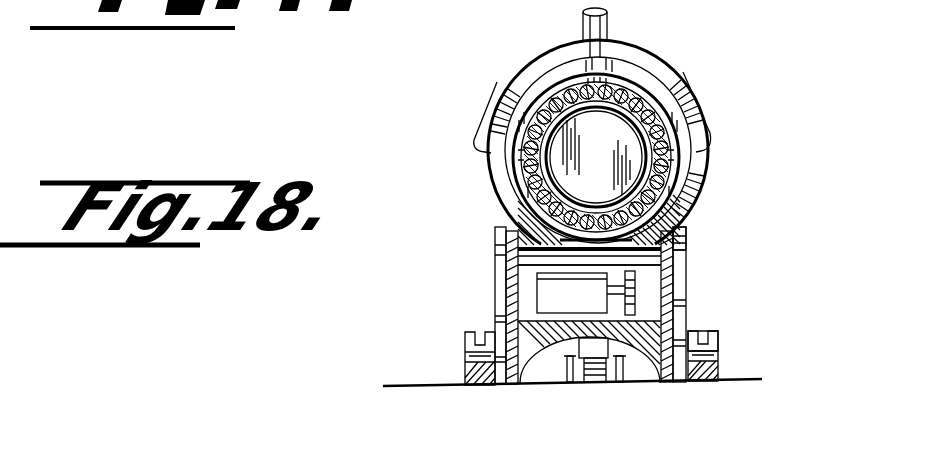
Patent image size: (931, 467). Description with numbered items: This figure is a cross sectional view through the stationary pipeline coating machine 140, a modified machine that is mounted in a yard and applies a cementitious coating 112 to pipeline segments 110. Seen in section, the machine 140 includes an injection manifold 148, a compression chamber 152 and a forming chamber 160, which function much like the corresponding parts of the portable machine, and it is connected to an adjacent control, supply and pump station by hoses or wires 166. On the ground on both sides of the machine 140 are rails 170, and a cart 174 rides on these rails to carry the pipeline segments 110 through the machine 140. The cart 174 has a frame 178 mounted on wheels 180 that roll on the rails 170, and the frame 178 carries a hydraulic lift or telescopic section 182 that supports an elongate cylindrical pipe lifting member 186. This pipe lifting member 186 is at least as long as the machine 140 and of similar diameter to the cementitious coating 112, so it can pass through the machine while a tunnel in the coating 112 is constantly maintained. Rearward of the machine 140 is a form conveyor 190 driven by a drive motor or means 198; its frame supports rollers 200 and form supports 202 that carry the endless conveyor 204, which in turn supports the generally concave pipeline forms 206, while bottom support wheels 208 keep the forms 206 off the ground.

The pipeline segment 110 is at (512, 180).
The cementitious coating 112 is at (520, 182).
The pipeline coating machine 140 is at (480, 104).
The injection manifold 148 is at (642, 62).
The compression chamber 152 is at (552, 58).
The forming chamber 160 is at (703, 106).
The hoses or wires 166 is at (582, 24).
The rails 170 is at (480, 386).
The cart 174 is at (686, 248).
The frame 178 is at (679, 238).
The wheels 180 is at (717, 345).
The hydraulic lift or telescopic section 182 is at (690, 212).
The pipe lifting member 186 is at (643, 100).
The form conveyor 190 is at (520, 276).
The drive motor or means 198 is at (548, 290).
The rollers 200 is at (680, 256).
The form supports 202 is at (496, 242).
The endless conveyor 204 is at (640, 324).
The pipeline forms 206 is at (697, 173).
The bottom support wheels 208 is at (581, 384).